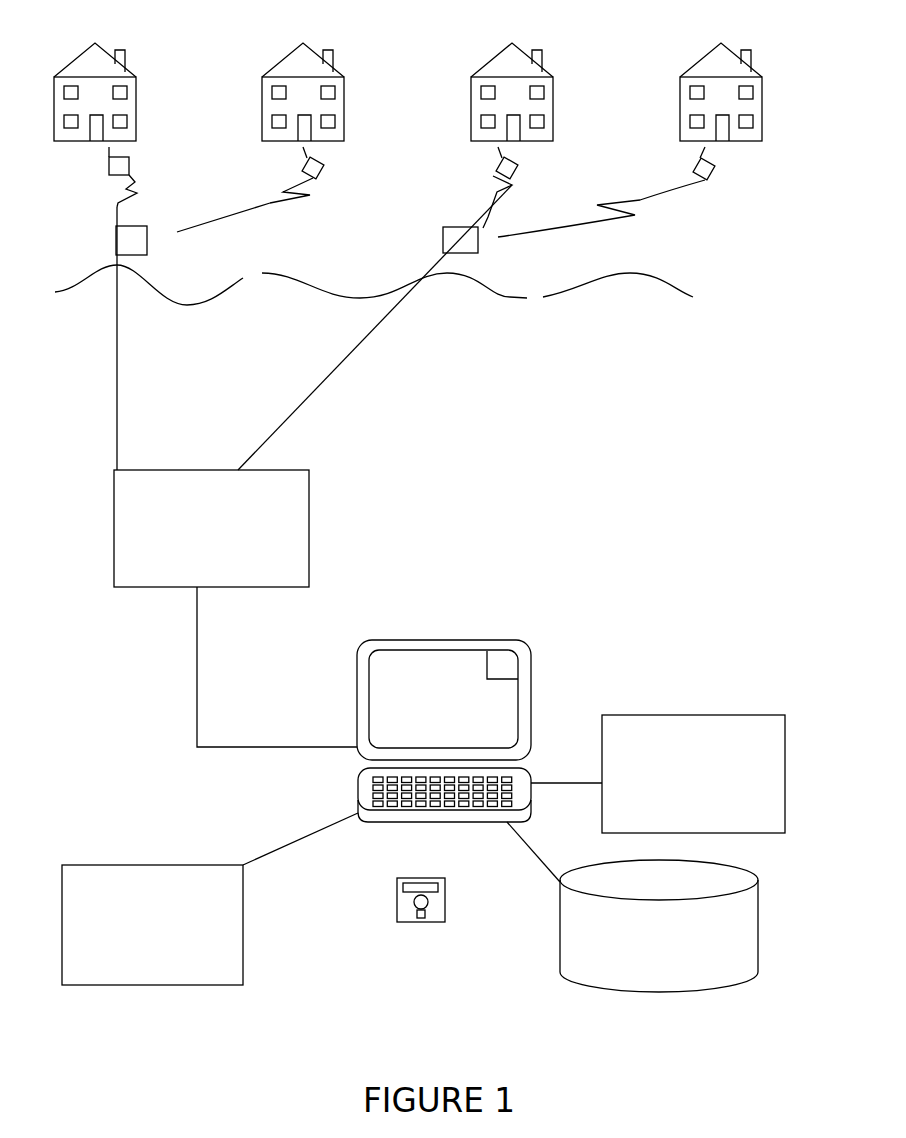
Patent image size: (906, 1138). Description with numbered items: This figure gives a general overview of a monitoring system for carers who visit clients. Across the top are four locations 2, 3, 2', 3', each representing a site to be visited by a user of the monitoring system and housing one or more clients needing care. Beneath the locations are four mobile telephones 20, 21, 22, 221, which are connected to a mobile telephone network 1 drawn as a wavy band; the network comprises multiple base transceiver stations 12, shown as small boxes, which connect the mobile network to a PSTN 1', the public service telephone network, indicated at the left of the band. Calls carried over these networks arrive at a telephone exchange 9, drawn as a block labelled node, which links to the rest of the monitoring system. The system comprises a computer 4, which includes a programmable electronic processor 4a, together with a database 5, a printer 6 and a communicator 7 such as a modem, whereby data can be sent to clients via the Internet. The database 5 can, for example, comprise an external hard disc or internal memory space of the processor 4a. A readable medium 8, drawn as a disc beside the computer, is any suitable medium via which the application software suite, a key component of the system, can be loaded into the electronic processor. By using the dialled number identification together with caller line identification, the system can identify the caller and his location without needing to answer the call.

The mobile telephone network 1 is at (477, 298).
The PSTN 1' is at (149, 296).
The location 2 is at (95, 73).
The location 3 is at (304, 73).
The location 2' is at (514, 73).
The location 3' is at (726, 73).
The mobile telephone 20 is at (130, 158).
The mobile telephone 21 is at (323, 170).
The mobile telephone 22 is at (517, 172).
The mobile telephone 221 is at (717, 173).
The base transceiver station 12 is at (138, 240).
The telephone exchange 9 is at (162, 468).
The computer 4 is at (532, 667).
The programmable electronic processor 4a is at (502, 662).
The printer 6 is at (690, 713).
The database 5 is at (560, 938).
The communicator 7 is at (243, 933).
The readable medium 8 is at (435, 923).